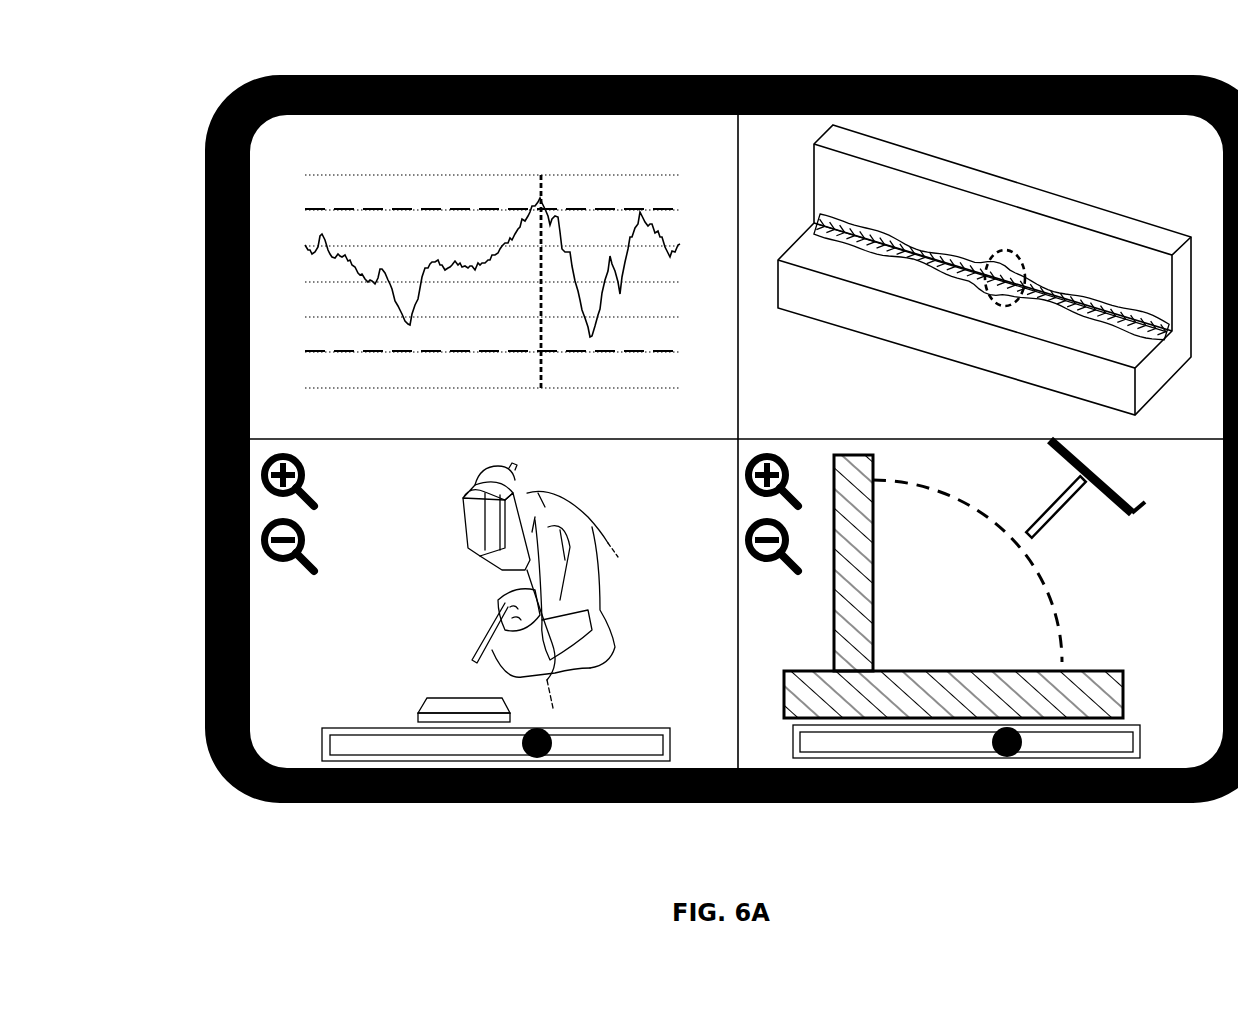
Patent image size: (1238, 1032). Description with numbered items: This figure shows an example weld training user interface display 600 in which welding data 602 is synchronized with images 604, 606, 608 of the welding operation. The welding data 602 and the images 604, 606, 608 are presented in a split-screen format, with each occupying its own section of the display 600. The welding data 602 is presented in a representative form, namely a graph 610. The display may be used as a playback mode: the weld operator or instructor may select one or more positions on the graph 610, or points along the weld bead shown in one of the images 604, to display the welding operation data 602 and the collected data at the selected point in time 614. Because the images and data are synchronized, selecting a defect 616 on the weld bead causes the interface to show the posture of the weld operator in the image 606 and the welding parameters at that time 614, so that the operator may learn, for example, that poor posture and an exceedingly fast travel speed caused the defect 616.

The weld training user interface display 600 is at (146, 49).
The welding data 602 is at (490, 273).
The image of the welding operation 604 is at (987, 269).
The image of the welding operation 606 is at (721, 478).
The image of the welding operation 608 is at (1205, 478).
The graph 610 is at (331, 161).
The selected point in time 614 is at (543, 728).
The defect 616 is at (990, 302).